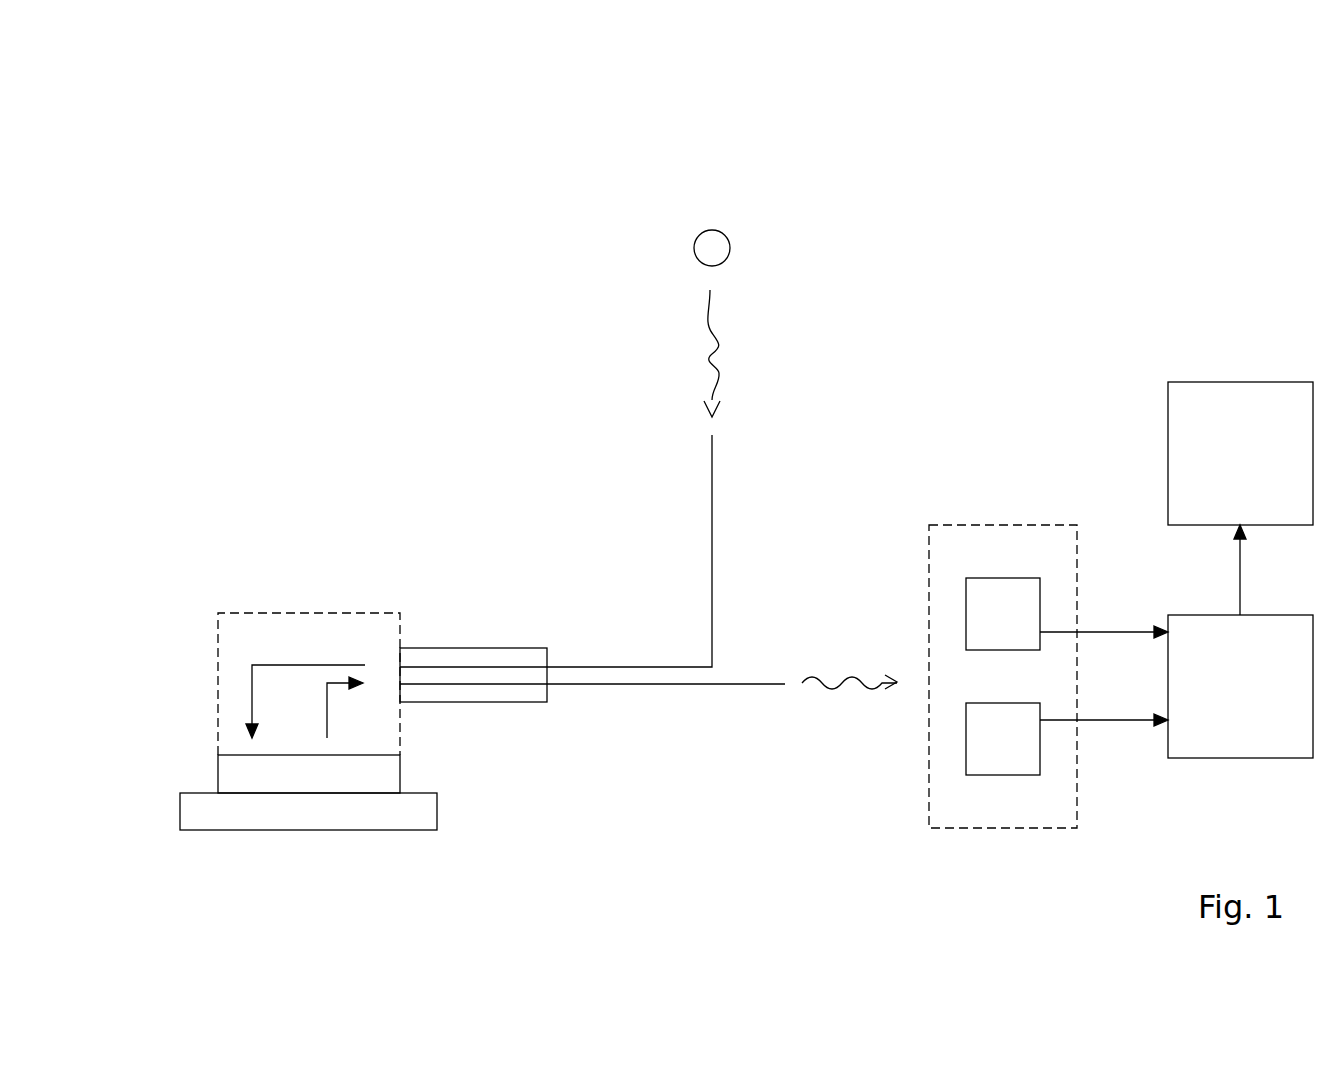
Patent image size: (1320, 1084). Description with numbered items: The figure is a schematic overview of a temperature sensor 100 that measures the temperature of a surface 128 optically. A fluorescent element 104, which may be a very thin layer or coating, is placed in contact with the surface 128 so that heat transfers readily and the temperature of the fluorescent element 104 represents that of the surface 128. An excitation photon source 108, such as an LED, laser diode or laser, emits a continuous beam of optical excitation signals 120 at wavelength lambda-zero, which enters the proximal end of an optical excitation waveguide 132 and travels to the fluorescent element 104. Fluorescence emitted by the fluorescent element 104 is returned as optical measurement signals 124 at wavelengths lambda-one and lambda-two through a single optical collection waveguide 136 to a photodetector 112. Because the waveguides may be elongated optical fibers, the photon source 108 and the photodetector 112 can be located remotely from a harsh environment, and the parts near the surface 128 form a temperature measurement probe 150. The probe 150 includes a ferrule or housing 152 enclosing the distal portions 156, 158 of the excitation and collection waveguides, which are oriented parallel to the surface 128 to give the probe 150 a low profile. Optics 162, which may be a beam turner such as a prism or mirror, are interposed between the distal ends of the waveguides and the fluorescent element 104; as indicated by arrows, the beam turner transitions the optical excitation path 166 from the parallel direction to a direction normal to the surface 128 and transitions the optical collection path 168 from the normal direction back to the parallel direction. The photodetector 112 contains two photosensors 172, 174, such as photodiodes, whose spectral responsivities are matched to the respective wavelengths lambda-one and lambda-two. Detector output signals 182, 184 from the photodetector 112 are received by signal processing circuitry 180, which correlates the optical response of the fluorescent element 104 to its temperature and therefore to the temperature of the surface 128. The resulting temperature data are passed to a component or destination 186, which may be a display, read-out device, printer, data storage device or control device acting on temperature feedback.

The temperature sensor 100 is at (270, 135).
The excitation photon source 108 is at (700, 233).
The optical excitation signals 120 is at (708, 353).
The temperature measurement probe 150 is at (193, 556).
The optics 162 is at (217, 695).
The optical excitation path 166 is at (272, 665).
The optical collection path 168 is at (327, 712).
The fluorescent element 104 is at (217, 768).
The surface 128 is at (197, 793).
The ferrule or housing 152 is at (457, 645).
The distal portion of optical excitation waveguide 156 is at (513, 665).
The distal portion of optical collection waveguide 158 is at (502, 685).
The optical excitation waveguide 132 is at (627, 665).
The optical collection waveguide 136 is at (705, 687).
The optical measurement signals 124 is at (872, 678).
The photodetector 112 is at (1002, 525).
The photosensor 172 is at (965, 613).
The photosensor 174 is at (998, 775).
The detector output signal 182 is at (1102, 632).
The detector output signal 184 is at (1097, 723).
The signal processing circuitry 180 is at (1240, 686).
The component or destination 186 is at (1240, 498).